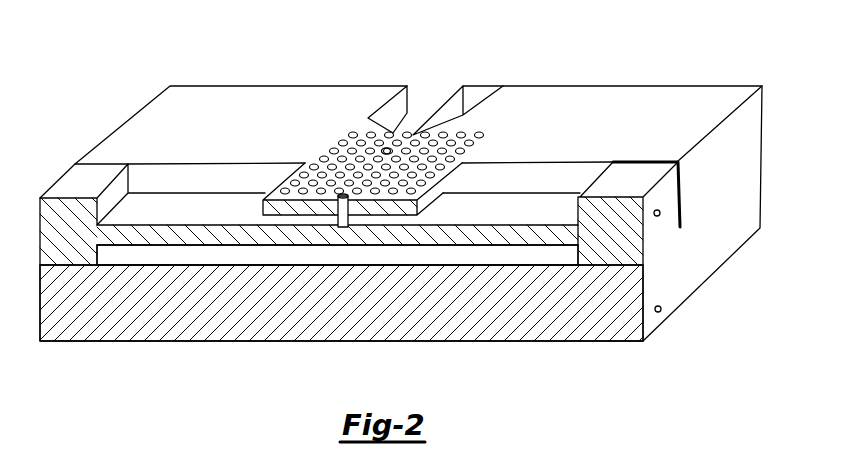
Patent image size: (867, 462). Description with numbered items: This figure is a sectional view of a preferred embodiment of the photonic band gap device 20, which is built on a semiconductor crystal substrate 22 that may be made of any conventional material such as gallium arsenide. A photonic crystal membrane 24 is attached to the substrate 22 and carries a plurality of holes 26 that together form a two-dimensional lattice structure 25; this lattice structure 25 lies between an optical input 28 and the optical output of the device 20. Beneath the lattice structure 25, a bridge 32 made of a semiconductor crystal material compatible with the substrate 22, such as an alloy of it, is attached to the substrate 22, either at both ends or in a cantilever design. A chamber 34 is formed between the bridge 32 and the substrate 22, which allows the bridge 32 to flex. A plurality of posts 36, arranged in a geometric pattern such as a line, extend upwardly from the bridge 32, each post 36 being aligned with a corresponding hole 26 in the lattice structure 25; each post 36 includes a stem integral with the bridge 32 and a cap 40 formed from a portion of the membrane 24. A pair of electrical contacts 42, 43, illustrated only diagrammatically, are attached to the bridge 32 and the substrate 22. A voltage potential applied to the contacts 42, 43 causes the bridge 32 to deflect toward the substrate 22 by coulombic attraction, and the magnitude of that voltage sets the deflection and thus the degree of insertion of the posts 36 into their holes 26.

The photonic band gap device 20 is at (193, 107).
The semiconductor crystal substrate 22 is at (133, 341).
The photonic crystal membrane 24 is at (283, 186).
The lattice structure 25 is at (481, 139).
The holes 26 is at (327, 150).
The optical input 28 is at (448, 92).
The bridge 32 is at (135, 232).
The chamber 34 is at (221, 257).
The posts 36 is at (345, 227).
The cap 40 is at (384, 148).
The electrical contact 42 is at (660, 214).
The electrical contact 43 is at (661, 310).